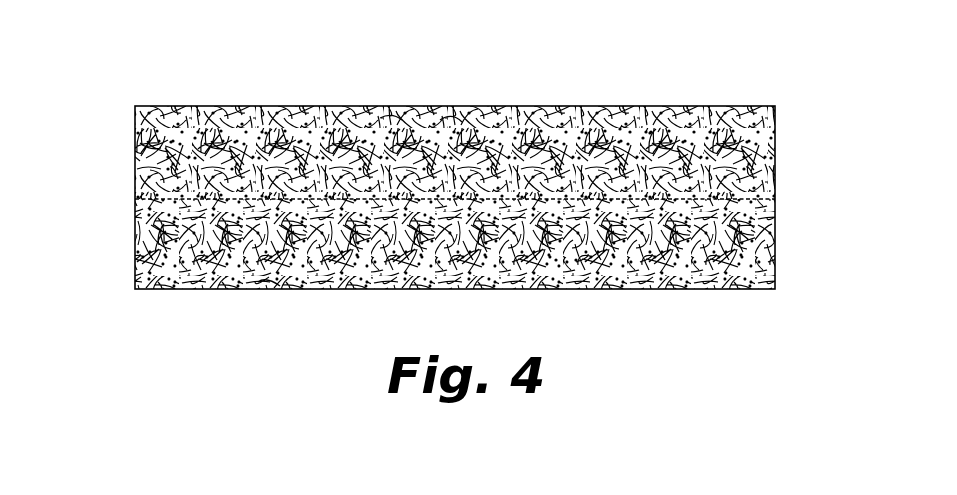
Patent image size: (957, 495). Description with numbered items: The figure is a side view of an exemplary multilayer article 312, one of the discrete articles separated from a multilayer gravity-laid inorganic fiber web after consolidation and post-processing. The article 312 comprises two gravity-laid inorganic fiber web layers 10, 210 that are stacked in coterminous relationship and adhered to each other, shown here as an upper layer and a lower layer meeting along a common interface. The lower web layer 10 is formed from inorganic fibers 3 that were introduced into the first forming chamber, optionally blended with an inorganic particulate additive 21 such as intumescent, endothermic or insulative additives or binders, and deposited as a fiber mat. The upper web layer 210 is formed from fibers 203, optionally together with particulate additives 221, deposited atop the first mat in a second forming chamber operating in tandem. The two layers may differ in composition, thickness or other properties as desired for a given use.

The multilayer article 312 is at (454, 149).
The gravity-laid inorganic fiber web layer 210 is at (135, 122).
The fibers 203 is at (448, 115).
The particulate additives 221 is at (650, 130).
The gravity-laid inorganic fiber web layer 10 is at (775, 220).
The inorganic fibers 3 is at (268, 290).
The particulate additive 21 is at (576, 262).